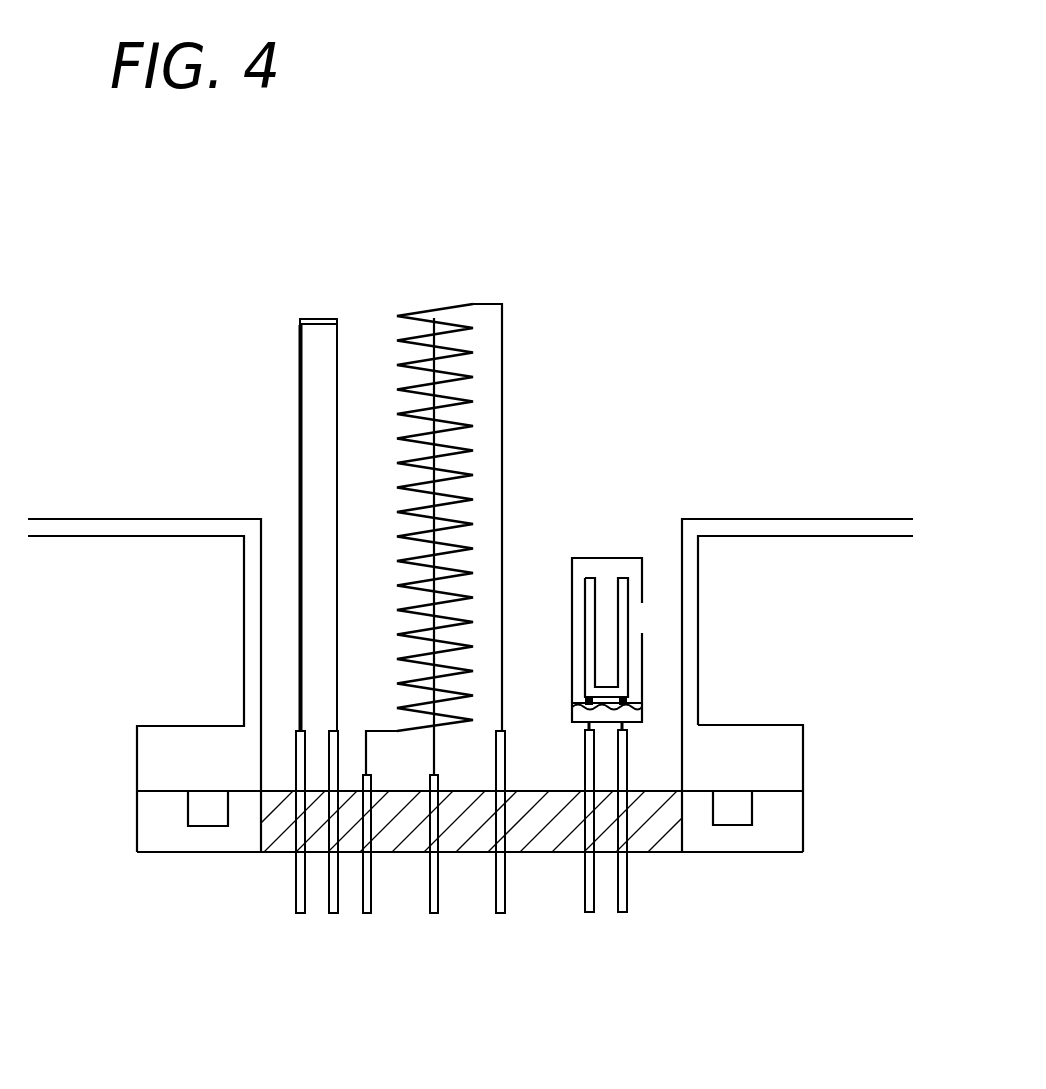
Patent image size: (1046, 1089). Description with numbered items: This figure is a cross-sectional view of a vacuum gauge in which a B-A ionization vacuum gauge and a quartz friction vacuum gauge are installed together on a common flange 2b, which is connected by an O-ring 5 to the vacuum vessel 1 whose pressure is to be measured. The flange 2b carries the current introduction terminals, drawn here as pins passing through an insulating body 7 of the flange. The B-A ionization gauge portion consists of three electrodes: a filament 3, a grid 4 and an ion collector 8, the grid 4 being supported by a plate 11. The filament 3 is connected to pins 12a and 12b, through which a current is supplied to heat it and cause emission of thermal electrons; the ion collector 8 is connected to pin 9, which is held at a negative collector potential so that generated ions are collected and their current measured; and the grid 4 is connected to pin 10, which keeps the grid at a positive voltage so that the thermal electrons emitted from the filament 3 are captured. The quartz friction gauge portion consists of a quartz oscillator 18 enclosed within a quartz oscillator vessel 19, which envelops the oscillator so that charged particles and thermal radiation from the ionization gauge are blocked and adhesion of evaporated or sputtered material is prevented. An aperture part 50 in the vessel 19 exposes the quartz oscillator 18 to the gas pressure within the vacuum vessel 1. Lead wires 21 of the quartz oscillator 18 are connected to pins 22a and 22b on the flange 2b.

The vacuum vessel 1 is at (802, 519).
The common flange 2b is at (790, 852).
The filament 3 is at (335, 380).
The grid 4 is at (408, 315).
The O-ring 5 is at (752, 808).
The insulating base 7 is at (657, 852).
The ion collector 8 is at (440, 392).
The pin 9 is at (431, 913).
The pin 10 is at (363, 913).
The support plate 11 is at (502, 333).
The pin 12a is at (294, 913).
The pin 12b is at (326, 913).
The quartz oscillator 18 is at (594, 578).
The quartz oscillator vessel 19 is at (643, 685).
The lead wires 21 is at (628, 730).
The pin 22a is at (585, 913).
The pin 22b is at (617, 913).
The aperture part 50 is at (645, 620).